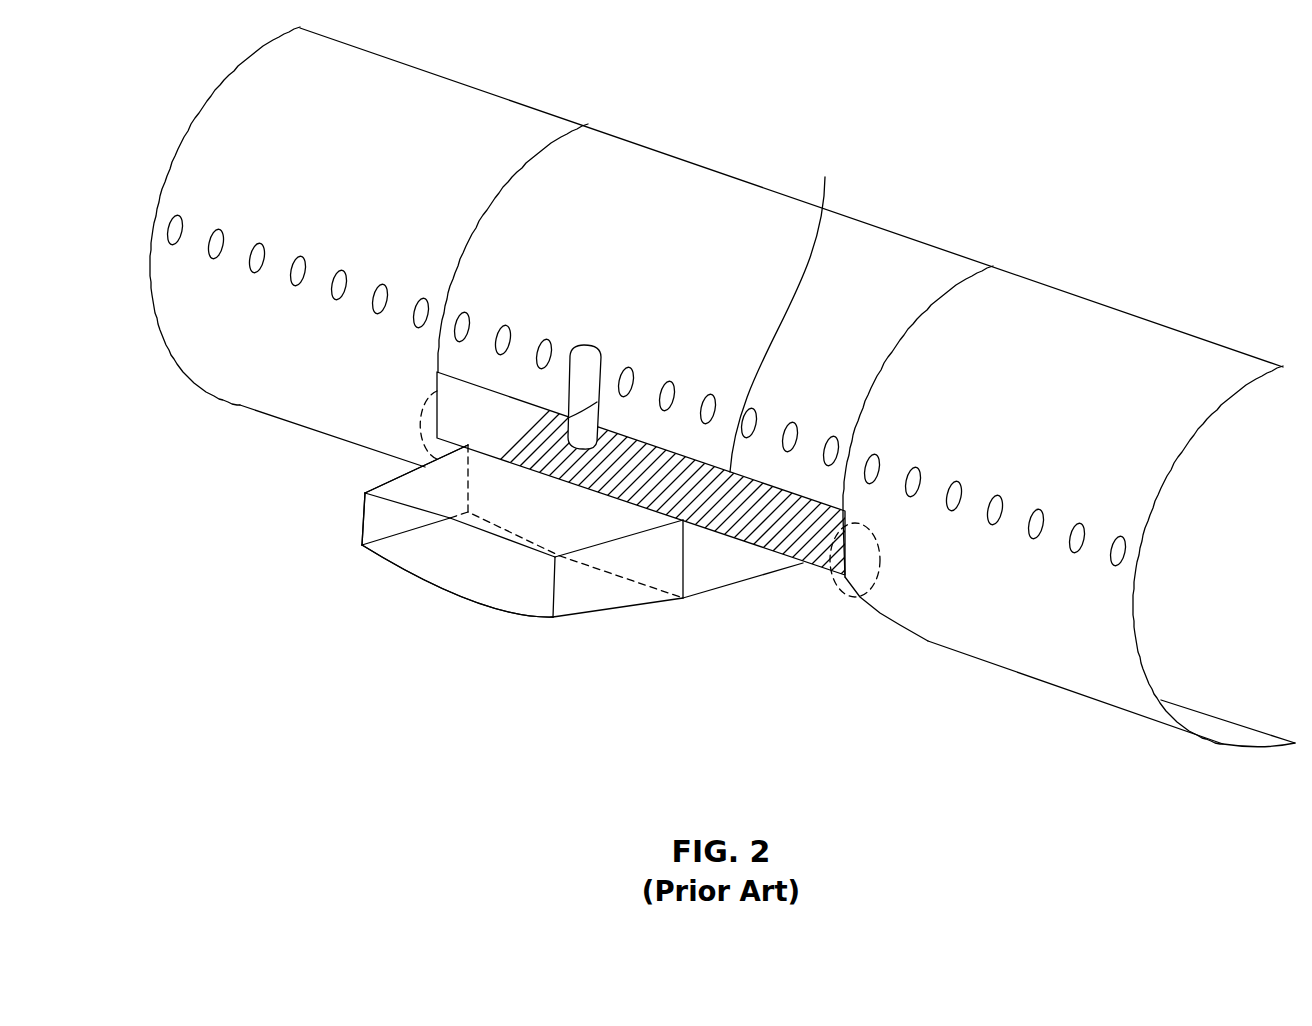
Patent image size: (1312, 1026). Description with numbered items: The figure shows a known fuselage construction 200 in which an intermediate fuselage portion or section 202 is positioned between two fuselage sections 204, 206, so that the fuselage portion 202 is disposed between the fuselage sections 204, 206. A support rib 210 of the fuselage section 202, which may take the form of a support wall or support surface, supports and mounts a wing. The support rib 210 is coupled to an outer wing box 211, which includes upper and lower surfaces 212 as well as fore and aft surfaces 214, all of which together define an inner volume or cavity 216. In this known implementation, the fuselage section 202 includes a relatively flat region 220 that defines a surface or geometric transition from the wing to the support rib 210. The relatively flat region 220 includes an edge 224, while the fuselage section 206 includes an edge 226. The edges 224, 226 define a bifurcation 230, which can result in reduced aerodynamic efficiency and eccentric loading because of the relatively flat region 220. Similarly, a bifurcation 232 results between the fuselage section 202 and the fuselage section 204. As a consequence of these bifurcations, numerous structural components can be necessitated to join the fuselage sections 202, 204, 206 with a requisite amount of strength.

The fuselage construction 200 is at (1100, 118).
The intermediate fuselage portion 202 is at (680, 190).
The fuselage section 204 is at (448, 117).
The fuselage section 206 is at (1132, 345).
The support rib 210 is at (570, 516).
The outer wing box 211 is at (350, 580).
The upper and lower surfaces 212 is at (427, 503).
The fore and aft surfaces 214 is at (362, 518).
The inner volume 216 is at (505, 574).
The relatively flat region 220 is at (792, 308).
The edge 224 is at (836, 560).
The edge 226 is at (862, 598).
The bifurcation 230 is at (847, 592).
The bifurcation 232 is at (427, 390).